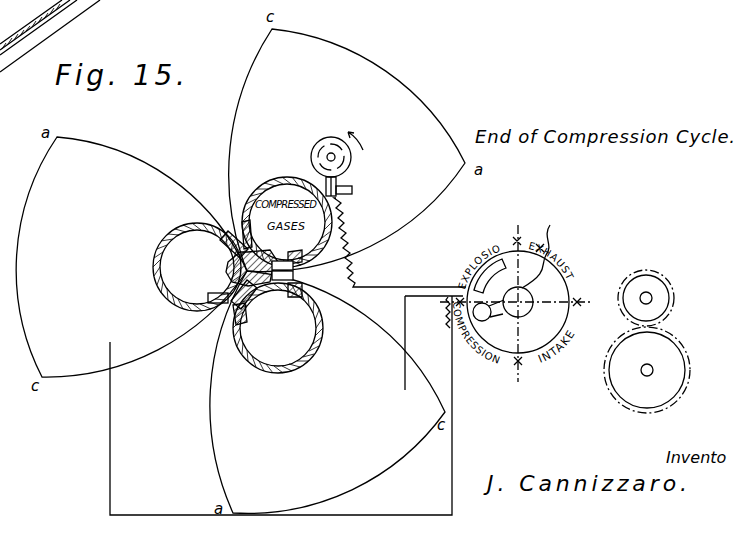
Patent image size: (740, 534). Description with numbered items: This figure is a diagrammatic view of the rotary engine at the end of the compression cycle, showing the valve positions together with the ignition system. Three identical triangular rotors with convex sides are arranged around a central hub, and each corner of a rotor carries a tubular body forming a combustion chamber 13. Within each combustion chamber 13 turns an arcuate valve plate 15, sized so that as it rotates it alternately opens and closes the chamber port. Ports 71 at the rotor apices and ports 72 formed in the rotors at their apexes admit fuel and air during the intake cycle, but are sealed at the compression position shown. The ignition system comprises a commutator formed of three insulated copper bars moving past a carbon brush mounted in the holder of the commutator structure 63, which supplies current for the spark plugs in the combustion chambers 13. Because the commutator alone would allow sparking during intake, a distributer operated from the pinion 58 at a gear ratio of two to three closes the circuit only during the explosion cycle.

The combustion chamber 13 is at (271, 353).
The valve plate 15 is at (260, 295).
The pinion 58 is at (622, 378).
The commutator structure 63 is at (352, 193).
The port 71 is at (228, 297).
The port 72 is at (235, 228).